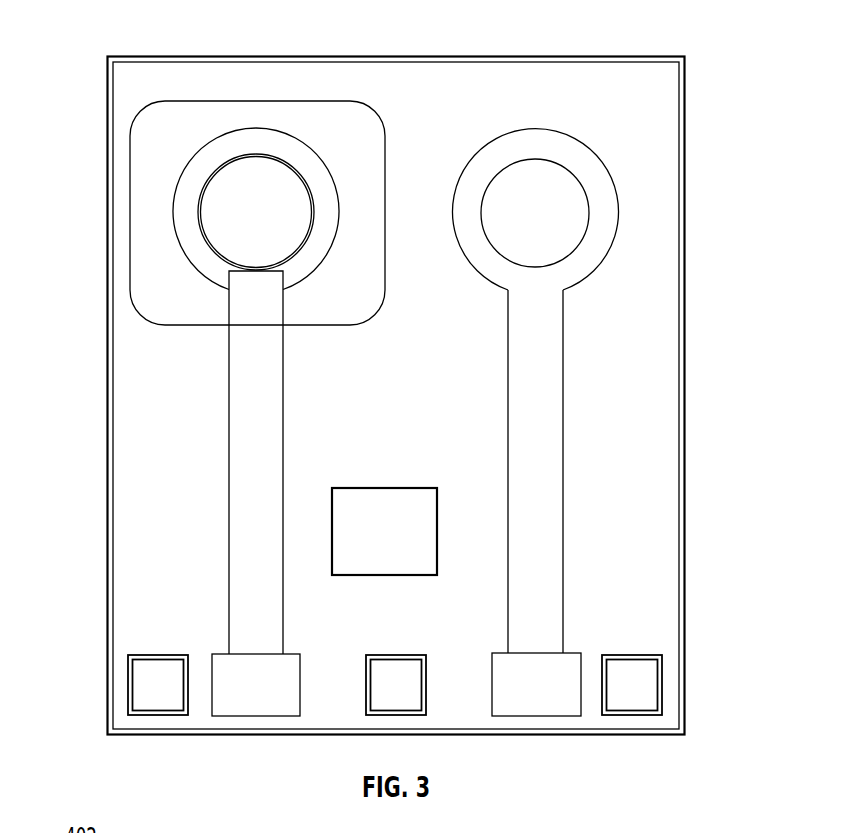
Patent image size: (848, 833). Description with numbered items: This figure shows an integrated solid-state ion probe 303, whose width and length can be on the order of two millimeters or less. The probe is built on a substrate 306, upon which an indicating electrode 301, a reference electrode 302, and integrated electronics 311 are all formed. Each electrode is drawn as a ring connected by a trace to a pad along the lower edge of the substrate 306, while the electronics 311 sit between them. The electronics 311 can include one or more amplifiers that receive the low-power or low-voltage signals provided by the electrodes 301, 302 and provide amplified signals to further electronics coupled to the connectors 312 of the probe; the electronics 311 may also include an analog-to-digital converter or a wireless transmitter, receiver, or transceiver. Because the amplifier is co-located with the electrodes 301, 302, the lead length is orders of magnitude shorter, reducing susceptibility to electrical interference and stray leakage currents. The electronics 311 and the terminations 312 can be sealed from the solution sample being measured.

The integrated solid-state ion probe 303 is at (142, 26).
The reference electrode 302 is at (210, 224).
The indicating electrode 301 is at (573, 222).
The integrated electronics 311 is at (368, 485).
The connectors 312 is at (140, 691).
The substrate 306 is at (106, 734).